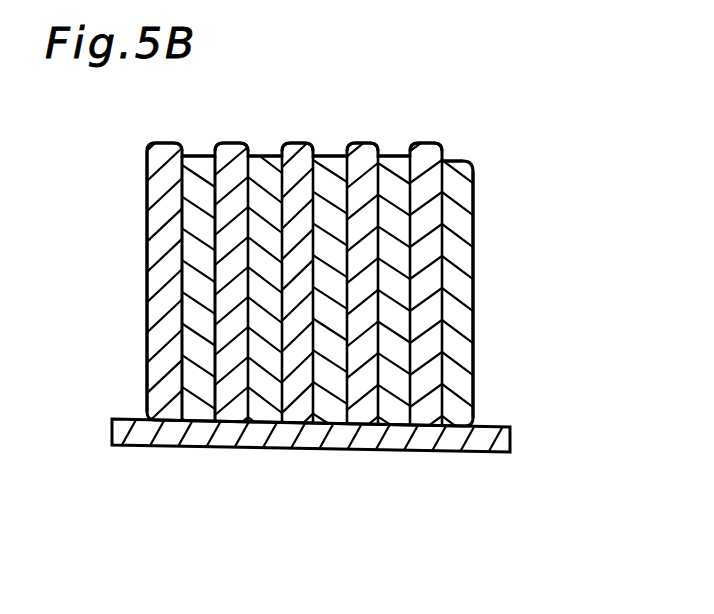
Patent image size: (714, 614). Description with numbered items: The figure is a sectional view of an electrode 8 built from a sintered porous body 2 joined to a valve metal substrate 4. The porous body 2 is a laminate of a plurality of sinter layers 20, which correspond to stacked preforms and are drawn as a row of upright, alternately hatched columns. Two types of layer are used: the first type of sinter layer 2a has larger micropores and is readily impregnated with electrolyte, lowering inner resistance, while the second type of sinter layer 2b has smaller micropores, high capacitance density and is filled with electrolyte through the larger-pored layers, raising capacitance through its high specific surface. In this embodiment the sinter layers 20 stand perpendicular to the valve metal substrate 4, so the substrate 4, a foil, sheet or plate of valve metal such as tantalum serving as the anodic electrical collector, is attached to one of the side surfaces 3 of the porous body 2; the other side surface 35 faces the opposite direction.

The electrode 8 is at (348, 585).
The porous body 2 is at (516, 150).
The first type of sinter layer 2a is at (430, 160).
The second type of sinter layer 2b is at (395, 235).
The side surface 3 is at (322, 150).
The sinter layer 20 is at (268, 157).
The side surface 35 is at (140, 317).
The valve metal substrate 4 is at (485, 435).